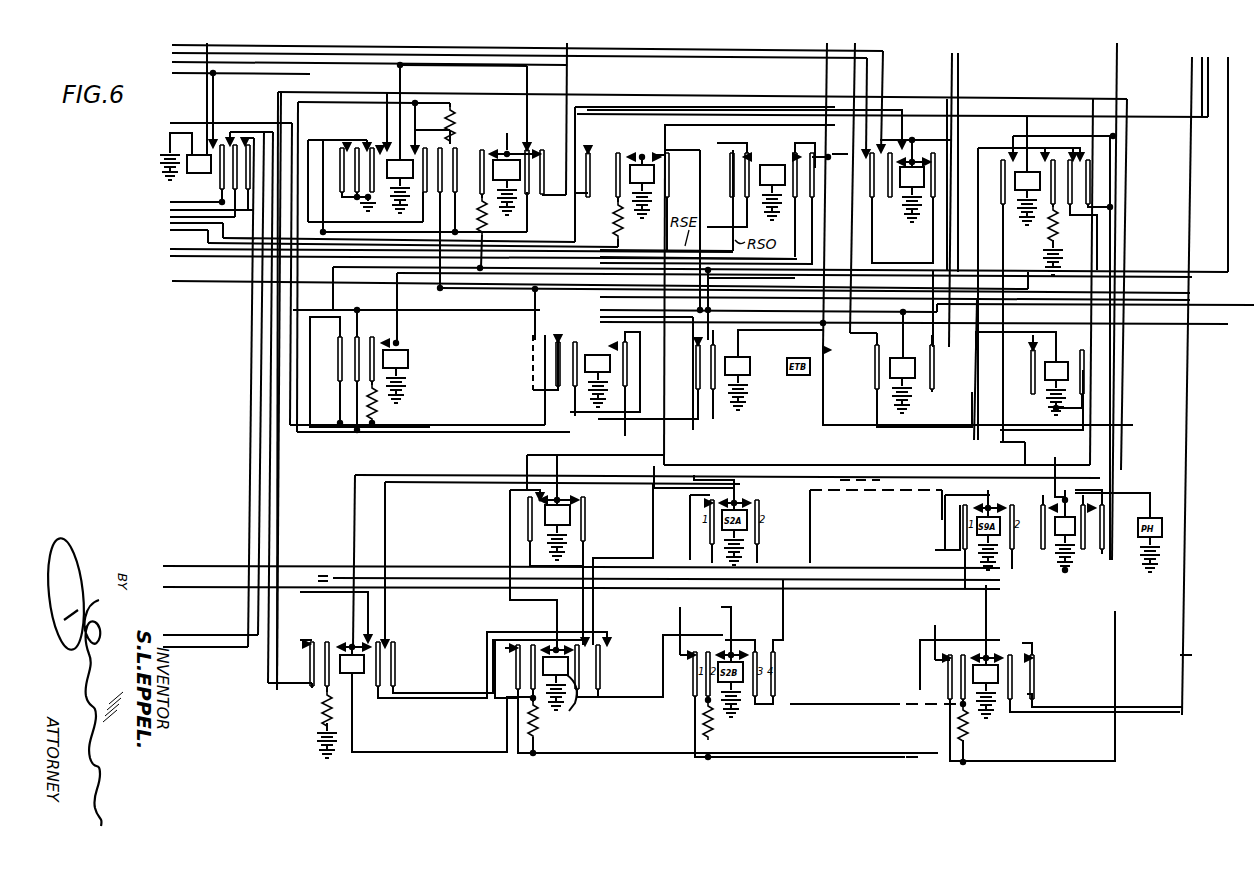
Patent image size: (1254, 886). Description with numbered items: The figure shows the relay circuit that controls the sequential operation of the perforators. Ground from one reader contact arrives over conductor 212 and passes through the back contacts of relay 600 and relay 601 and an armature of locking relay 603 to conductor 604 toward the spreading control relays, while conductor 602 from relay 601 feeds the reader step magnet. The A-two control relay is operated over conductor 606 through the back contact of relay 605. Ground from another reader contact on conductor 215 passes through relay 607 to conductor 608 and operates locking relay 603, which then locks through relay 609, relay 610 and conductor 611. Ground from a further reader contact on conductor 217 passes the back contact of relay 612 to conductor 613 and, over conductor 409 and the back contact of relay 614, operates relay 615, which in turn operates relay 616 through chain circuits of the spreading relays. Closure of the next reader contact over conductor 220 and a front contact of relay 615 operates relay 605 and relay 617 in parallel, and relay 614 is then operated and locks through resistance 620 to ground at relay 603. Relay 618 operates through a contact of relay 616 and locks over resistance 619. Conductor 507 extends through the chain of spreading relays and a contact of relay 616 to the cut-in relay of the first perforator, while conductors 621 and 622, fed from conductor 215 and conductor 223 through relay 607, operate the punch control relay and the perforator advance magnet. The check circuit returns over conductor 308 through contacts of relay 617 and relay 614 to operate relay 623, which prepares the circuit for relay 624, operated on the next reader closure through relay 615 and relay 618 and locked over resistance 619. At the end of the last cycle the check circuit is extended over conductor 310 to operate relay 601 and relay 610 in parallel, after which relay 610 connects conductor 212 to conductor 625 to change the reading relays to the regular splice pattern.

The conductor 212 is at (201, 281).
The conductor 215 is at (233, 207).
The conductor 217 is at (566, 90).
The conductor 220 is at (1116, 78).
The conductor 223 is at (184, 230).
The conductor 308 is at (632, 235).
The conductor 310 is at (894, 254).
The conductor 409 is at (1143, 116).
The conductor 507 is at (1182, 655).
The RS4 relay 600 is at (1045, 385).
The RS3 relay 601 is at (914, 381).
The conductor 602 is at (855, 78).
The LK1 relay 603 is at (381, 152).
The conductor 604 is at (228, 123).
The APB relay 605 is at (912, 160).
The conductor 606 is at (648, 54).
The RCD relay 607 is at (208, 180).
The conductor 608 is at (310, 74).
The RS2 relay 609 is at (748, 363).
The RS1 relay 610 is at (600, 355).
The conductor 611 is at (405, 433).
The LK2 relay 612 is at (506, 148).
The conductor 613 is at (432, 92).
The APD relay 614 is at (642, 155).
The APA relay 615 is at (1034, 167).
The S0B relay 616 is at (348, 643).
The APC relay 617 is at (772, 165).
The S1A relay 618 is at (573, 502).
The resistance 619 is at (543, 725).
The resistance 620 is at (613, 220).
The conductor 621 is at (260, 420).
The conductor 622 is at (258, 448).
The SS relay 623 is at (1073, 535).
The S1B relay 624 is at (573, 705).
The conductor 625 is at (1145, 313).